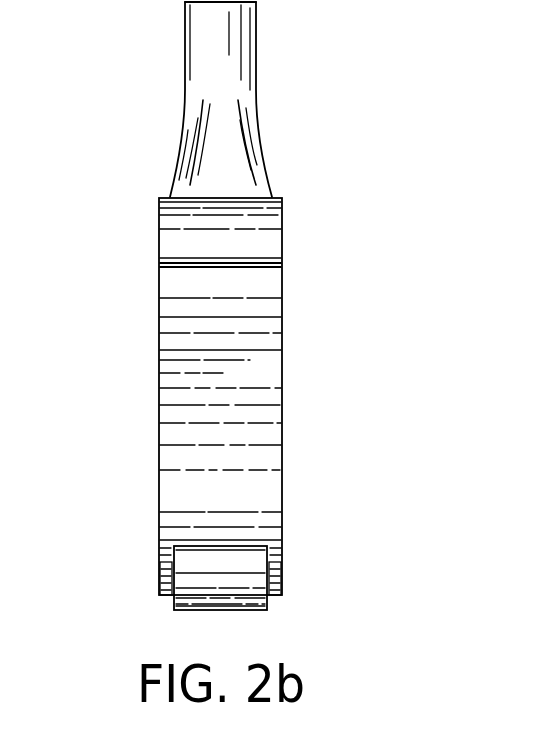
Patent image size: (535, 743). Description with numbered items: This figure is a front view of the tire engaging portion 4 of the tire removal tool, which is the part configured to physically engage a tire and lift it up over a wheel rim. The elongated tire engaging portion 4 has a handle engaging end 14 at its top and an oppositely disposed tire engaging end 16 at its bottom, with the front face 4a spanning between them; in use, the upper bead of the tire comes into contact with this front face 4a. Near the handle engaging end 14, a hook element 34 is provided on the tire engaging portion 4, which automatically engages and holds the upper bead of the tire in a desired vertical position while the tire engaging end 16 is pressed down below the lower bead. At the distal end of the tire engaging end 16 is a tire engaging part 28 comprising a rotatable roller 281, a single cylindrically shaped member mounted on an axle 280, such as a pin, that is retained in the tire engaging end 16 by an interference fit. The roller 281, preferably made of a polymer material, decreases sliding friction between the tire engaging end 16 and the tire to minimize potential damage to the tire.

The handle engaging end 14 is at (295, 87).
The tire engaging end 16 is at (120, 520).
The hook element 34 is at (287, 238).
The tire engaging portion 4 is at (240, 375).
The front face 4a is at (252, 433).
The tire engaging part 28 is at (250, 623).
The axle 280 is at (270, 573).
The rotatable roller 281 is at (205, 600).